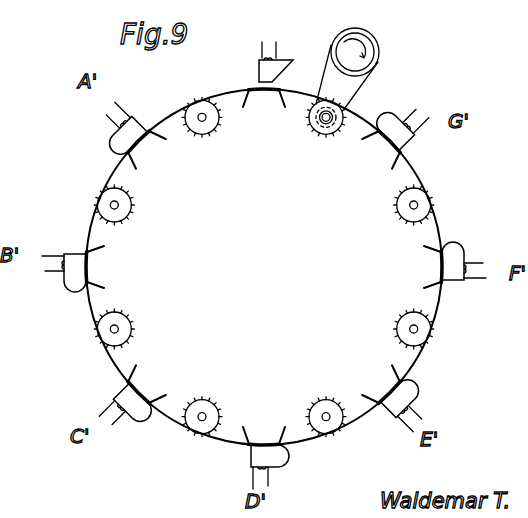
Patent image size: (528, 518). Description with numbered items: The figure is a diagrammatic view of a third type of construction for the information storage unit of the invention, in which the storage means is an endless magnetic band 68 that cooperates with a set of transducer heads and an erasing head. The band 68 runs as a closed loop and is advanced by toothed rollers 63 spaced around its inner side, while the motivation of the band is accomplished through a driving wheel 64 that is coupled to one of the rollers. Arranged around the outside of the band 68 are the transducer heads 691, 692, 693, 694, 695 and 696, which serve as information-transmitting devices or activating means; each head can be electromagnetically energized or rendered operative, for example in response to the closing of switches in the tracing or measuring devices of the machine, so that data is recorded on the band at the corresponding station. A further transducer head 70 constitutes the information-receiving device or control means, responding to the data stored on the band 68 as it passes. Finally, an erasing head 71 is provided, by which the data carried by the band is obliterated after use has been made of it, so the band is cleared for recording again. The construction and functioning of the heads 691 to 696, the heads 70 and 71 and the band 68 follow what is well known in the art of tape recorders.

The toothed rollers 63 is at (133, 195).
The driving wheel 64 is at (364, 33).
The endless magnetic band 68 is at (421, 175).
The transducer head 70 is at (397, 110).
The erasing head 71 is at (258, 68).
The transducer head 691 is at (107, 132).
The transducer head 692 is at (64, 283).
The transducer head 693 is at (115, 395).
The transducer head 694 is at (284, 468).
The transducer head 695 is at (417, 395).
The transducer head 696 is at (466, 243).